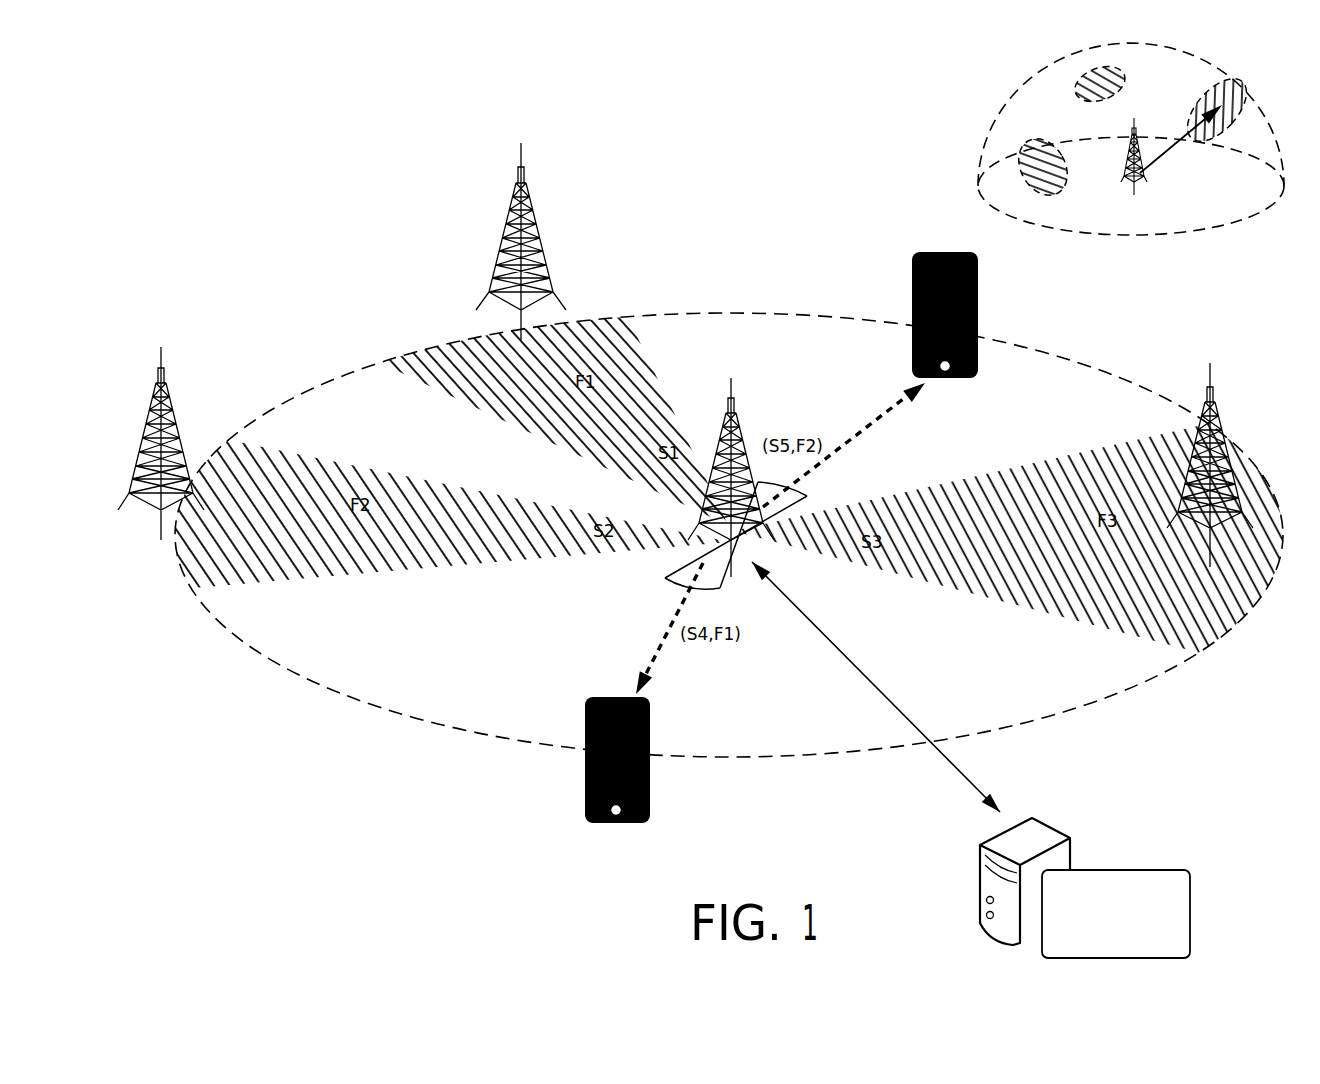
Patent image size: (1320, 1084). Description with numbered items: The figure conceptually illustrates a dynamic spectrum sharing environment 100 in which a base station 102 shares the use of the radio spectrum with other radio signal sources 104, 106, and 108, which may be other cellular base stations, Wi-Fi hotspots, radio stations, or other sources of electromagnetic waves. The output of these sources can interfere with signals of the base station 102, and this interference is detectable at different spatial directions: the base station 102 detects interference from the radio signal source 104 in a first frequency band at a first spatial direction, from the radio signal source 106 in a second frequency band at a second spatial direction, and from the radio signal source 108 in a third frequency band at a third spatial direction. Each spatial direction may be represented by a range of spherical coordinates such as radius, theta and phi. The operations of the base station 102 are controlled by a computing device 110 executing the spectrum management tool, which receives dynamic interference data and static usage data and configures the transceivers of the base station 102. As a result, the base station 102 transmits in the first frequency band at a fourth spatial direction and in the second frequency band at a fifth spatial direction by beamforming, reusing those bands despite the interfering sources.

The dynamic spectrum sharing environment 100 is at (1136, 254).
The base station 102 is at (745, 379).
The radio signal source 104 is at (538, 149).
The radio signal source 106 is at (178, 346).
The radio signal source 108 is at (1219, 370).
The computing device 110 is at (1071, 848).